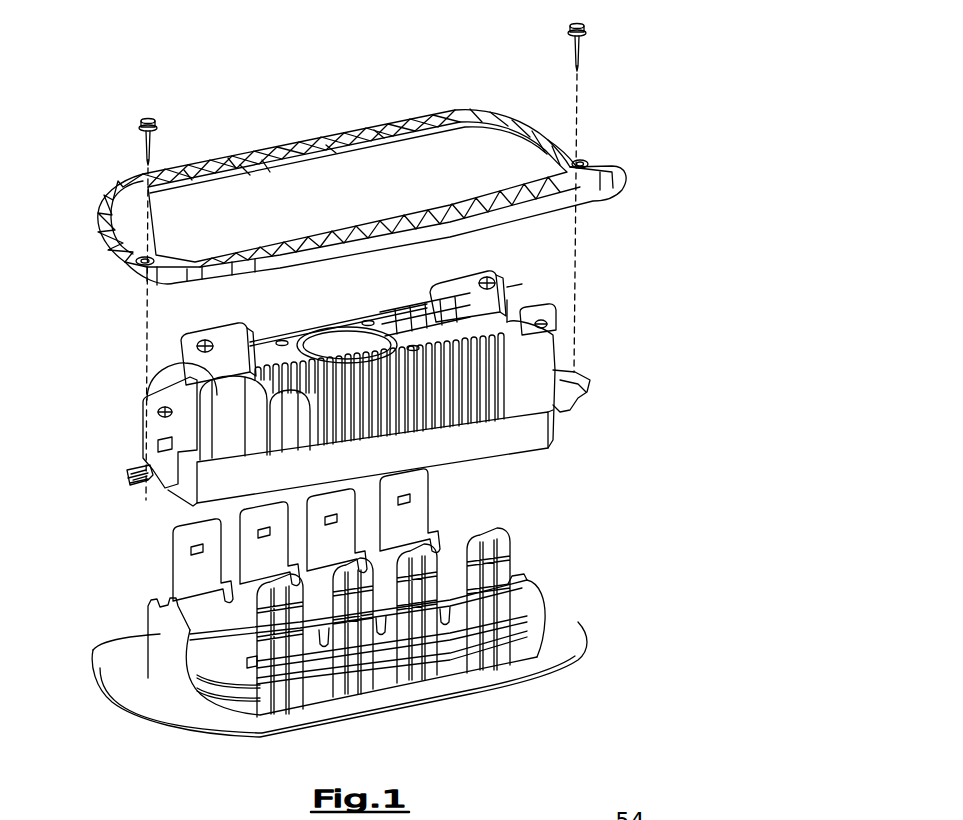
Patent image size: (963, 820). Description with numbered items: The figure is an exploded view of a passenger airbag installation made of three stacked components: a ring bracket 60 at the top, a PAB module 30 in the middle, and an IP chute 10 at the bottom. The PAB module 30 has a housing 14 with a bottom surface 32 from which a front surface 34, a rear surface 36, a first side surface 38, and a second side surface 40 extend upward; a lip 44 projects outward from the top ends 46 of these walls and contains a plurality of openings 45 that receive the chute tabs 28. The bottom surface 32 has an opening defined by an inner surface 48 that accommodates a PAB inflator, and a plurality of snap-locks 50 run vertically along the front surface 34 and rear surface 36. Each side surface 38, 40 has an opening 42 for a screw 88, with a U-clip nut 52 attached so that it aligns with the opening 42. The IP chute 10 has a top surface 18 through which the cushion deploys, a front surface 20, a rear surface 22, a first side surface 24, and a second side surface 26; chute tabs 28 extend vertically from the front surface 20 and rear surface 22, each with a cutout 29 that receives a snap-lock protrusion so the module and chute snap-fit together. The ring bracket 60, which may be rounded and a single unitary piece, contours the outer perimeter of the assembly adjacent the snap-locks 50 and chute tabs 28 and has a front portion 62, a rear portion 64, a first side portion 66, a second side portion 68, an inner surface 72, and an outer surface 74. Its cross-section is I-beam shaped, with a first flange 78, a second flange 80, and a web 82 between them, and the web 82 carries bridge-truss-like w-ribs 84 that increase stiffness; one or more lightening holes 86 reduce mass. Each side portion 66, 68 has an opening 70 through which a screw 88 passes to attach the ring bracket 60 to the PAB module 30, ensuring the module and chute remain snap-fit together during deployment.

The IP chute 10 is at (344, 618).
The housing 14 is at (557, 377).
The top surface 18 is at (541, 680).
The front surface 20 is at (450, 668).
The rear surface 22 is at (183, 600).
The first side surface 24 is at (157, 660).
The second side surface 26 is at (535, 600).
The chute tabs 28 is at (420, 520).
The cutout 29 is at (195, 550).
The PAB module 30 is at (374, 411).
The bottom surface 32 is at (258, 343).
The front surface 34 is at (453, 403).
The rear surface 36 is at (386, 316).
The first side surface 38 is at (200, 428).
The second side surface 40 is at (553, 353).
The opening 42 is at (135, 466).
The lip 44 is at (236, 487).
The openings 45 is at (367, 420).
The top ends 46 is at (197, 503).
The inner surface 48 is at (345, 340).
The snap-locks 50 is at (303, 440).
The U-clip nut 52 is at (143, 467).
The ring bracket 60 is at (359, 158).
The front portion 62 is at (472, 222).
The rear portion 64 is at (443, 108).
The first side portion 66 is at (104, 237).
The second side portion 68 is at (556, 141).
The opening 70 is at (135, 246).
The inner surface 72 is at (284, 166).
The outer surface 74 is at (580, 197).
The first flange 78 is at (248, 173).
The second flange 80 is at (187, 165).
The web 82 is at (233, 157).
The w-ribs 84 is at (322, 150).
The lightening holes 86 is at (373, 133).
The screw 88 is at (148, 117).